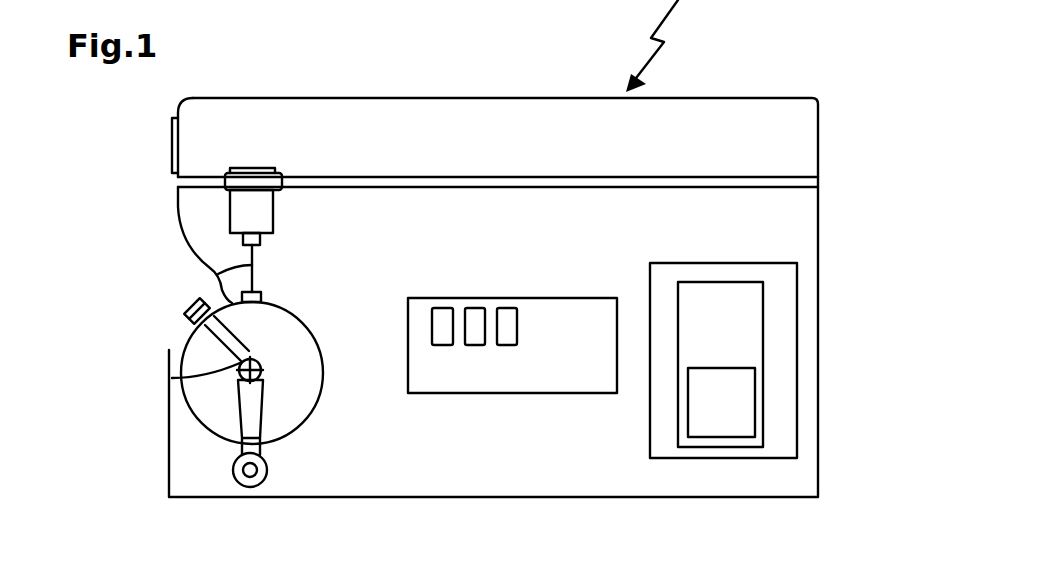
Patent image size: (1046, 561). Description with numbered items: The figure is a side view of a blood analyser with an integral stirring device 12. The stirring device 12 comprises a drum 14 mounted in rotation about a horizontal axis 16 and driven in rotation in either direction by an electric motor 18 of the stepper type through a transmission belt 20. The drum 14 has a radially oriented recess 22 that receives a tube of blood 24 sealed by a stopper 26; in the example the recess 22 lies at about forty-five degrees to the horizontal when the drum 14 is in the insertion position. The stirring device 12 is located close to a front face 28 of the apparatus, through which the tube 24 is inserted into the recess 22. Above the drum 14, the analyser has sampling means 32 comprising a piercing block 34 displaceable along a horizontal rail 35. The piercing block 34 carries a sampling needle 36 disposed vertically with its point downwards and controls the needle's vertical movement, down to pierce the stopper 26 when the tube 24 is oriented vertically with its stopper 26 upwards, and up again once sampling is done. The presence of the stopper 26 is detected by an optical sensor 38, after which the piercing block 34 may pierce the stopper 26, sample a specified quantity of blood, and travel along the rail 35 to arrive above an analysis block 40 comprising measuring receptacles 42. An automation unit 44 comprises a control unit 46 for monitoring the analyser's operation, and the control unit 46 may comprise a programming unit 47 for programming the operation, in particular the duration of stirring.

The stirring device 12 is at (274, 420).
The drum 14 is at (314, 337).
The horizontal axis 16 is at (265, 372).
The electric motor 18 is at (233, 487).
The transmission belt 20 is at (263, 427).
The recess 22 is at (172, 378).
The tube of blood 24 is at (200, 342).
The stopper 26 is at (185, 310).
The front face 28 is at (150, 458).
The sampling means 32 is at (284, 152).
The piercing block 34 is at (273, 215).
The horizontal rail 35 is at (686, 177).
The sampling needle 36 is at (217, 273).
The sensor 38 is at (262, 297).
The analysis block 40 is at (512, 336).
The measuring receptacles 42 is at (500, 298).
The automation unit 44 is at (765, 360).
The control unit 46 is at (720, 364).
The programming unit 47 is at (721, 402).